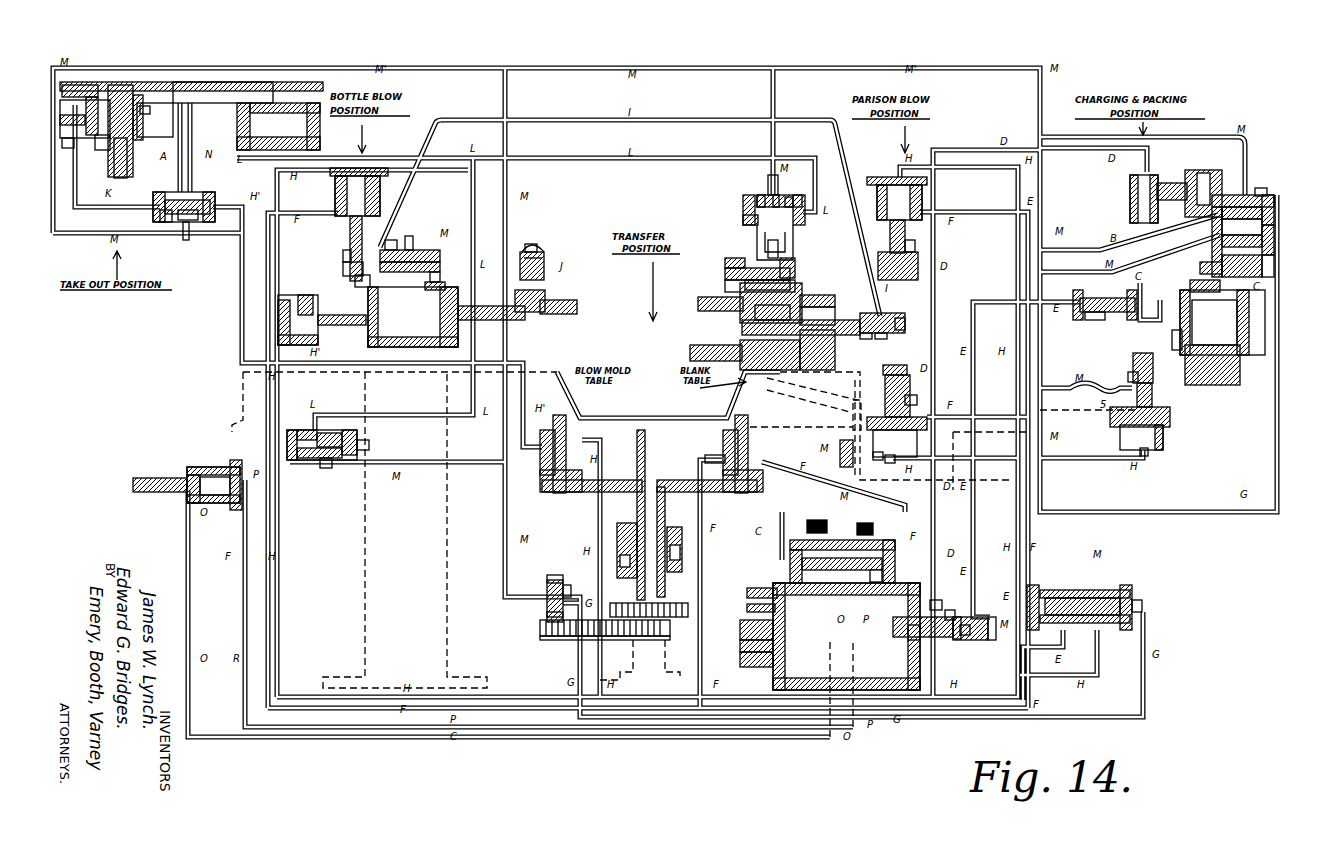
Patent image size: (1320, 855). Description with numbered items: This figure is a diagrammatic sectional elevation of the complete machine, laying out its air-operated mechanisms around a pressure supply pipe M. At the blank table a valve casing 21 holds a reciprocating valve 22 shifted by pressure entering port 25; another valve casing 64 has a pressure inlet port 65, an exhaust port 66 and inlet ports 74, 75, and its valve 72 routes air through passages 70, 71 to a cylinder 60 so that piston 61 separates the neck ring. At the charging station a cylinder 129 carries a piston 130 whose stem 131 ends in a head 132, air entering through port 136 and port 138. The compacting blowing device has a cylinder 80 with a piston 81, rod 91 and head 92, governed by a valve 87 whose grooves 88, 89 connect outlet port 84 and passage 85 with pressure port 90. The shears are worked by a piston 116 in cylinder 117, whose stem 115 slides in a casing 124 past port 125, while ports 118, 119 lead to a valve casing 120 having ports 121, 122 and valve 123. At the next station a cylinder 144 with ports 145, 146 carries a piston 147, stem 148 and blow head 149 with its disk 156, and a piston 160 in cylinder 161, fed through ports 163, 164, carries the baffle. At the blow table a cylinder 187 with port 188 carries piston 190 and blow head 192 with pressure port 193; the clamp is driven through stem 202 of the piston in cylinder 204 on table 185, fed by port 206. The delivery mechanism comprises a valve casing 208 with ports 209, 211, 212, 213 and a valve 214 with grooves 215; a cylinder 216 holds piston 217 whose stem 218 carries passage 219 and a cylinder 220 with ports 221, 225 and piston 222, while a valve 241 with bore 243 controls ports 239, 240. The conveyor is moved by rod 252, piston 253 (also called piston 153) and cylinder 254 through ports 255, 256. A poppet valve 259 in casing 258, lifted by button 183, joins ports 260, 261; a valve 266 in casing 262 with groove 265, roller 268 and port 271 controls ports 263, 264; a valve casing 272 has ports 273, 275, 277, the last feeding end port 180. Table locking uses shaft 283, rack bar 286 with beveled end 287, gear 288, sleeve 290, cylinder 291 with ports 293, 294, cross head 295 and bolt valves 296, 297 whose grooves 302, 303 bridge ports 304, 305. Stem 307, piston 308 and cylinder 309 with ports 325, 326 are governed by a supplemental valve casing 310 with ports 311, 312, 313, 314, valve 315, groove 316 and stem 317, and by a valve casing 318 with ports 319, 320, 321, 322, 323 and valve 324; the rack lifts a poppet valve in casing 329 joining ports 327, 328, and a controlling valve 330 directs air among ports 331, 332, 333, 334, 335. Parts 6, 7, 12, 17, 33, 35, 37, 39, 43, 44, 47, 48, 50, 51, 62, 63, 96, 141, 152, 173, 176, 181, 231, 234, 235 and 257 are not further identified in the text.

The transfer head 6 is at (812, 296).
The transfer head lower body 7 is at (800, 362).
The valve stem 12 is at (848, 433).
The valve rod 17 is at (853, 411).
The valve casing 21 is at (884, 342).
The valve 22 is at (867, 342).
The pressure port 25 is at (906, 332).
The shaft 33 is at (801, 327).
The arm 35 is at (771, 353).
The cam block 37 is at (882, 317).
The block 39 is at (826, 350).
The valve body 43 is at (767, 242).
The pipe connection 44 is at (781, 179).
The valve cap 47 is at (779, 195).
The valve guide 48 is at (788, 240).
The cavity 50 is at (826, 312).
The plate 51 is at (825, 297).
The cylinder 60 is at (769, 286).
The piston 61 is at (780, 279).
The valve block 62 is at (749, 271).
The valve end 63 is at (726, 256).
The valve casing 64 is at (755, 192).
The pressure inlet port 65 is at (787, 190).
The exhaust port 66 is at (794, 196).
The passage 70 is at (798, 264).
The passage 71 is at (768, 249).
The valve 72 is at (743, 203).
The pressure inlet port 74 is at (740, 219).
The pressure inlet port 75 is at (626, 242).
The cylinder 80 is at (1240, 325).
The piston 81 is at (1214, 322).
The outlet port 84 is at (1079, 310).
The passage 85 is at (1172, 341).
The valve 87 is at (1080, 298).
The annular groove 88 is at (1127, 318).
The annular groove 89 is at (1095, 320).
The pressure port 90 is at (1130, 200).
The rod 91 is at (1225, 231).
The head 92 is at (1189, 186).
The cap 96 is at (1190, 285).
The stem 115 is at (1222, 262).
The piston 116 is at (1271, 217).
The cylinder 117 is at (1273, 241).
The port 118 is at (1271, 266).
The port 119 is at (1201, 266).
The valve casing 120 is at (1243, 189).
The port 121 is at (1264, 177).
The inlet port 122 is at (1204, 222).
The valve 123 is at (1222, 213).
The casing 124 is at (1222, 241).
The port 125 is at (1222, 228).
The cylinder 129 is at (1163, 436).
The piston 130 is at (1141, 437).
The stem 131 is at (1152, 395).
The head 132 is at (1136, 356).
The pressure inlet port 136 is at (1119, 376).
The inlet port 138 is at (1155, 457).
The valve flange 141 is at (1132, 421).
The cylinder 144 is at (885, 459).
The port 145 is at (896, 465).
The port 146 is at (902, 417).
The piston 147 is at (895, 443).
The stem 148 is at (921, 397).
The blow head 149 is at (888, 395).
The cylinder base 152 is at (890, 256).
The piston 153 is at (922, 242).
The disk 156 is at (886, 365).
The piston 160 is at (899, 202).
The cylinder 161 is at (877, 194).
The port 163 is at (895, 177).
The port 164 is at (905, 225).
The valve block 173 is at (448, 290).
The cylinder bottom 176 is at (413, 341).
The end port 180 is at (413, 317).
The piston rod 181 is at (450, 335).
The tapered button 183 is at (546, 299).
The table 185 is at (350, 222).
The cylinder 187 is at (335, 193).
The port 188 is at (359, 166).
The piston 190 is at (357, 196).
The blow head 192 is at (343, 266).
The pressure port 193 is at (343, 252).
The stem 202 is at (330, 325).
The cylinder 204 is at (298, 326).
The port 206 is at (313, 302).
The valve casing 208 is at (215, 194).
The pressure inlet port 209 is at (189, 235).
The outlet port 211 is at (195, 200).
The end port 212 is at (160, 215).
The end port 213 is at (222, 207).
The valve 214 is at (185, 203).
The annular grooves 215 is at (181, 220).
The cylinder 216 is at (285, 127).
The piston 217 is at (278, 126).
The stem 218 is at (191, 99).
The passage 219 is at (200, 103).
The cylinder 220 is at (121, 123).
The port 221 is at (155, 120).
The piston 222 is at (138, 100).
The port 225 is at (128, 158).
The pin 231 is at (157, 108).
The spring 234 is at (100, 142).
The nut 235 is at (63, 146).
The pressure port 239 is at (81, 119).
The outlet port 240 is at (68, 128).
The valve 241 is at (92, 97).
The central bore 243 is at (79, 84).
The fluid pressure operated rod 252 is at (160, 477).
The piston 253 is at (215, 486).
The cylinder 254 is at (213, 476).
The port 255 is at (190, 503).
The port 256 is at (246, 480).
The valve 257 is at (320, 438).
The valve casing 258 is at (534, 242).
The poppet valve 259 is at (535, 249).
The outlet port 260 is at (544, 272).
The pressure port 261 is at (520, 275).
The valve casing 262 is at (330, 468).
The port 263 is at (333, 432).
The port 264 is at (315, 458).
The annular groove 265 is at (310, 428).
The valve 266 is at (356, 436).
The roller 268 is at (372, 440).
The radial port 271 is at (351, 284).
The valve casing 272 is at (440, 268).
The end port 273 is at (440, 256).
The pressure port 275 is at (414, 237).
The outlet port 277 is at (397, 246).
The shaft 283 is at (640, 458).
The rack bar 286 is at (545, 640).
The beveled end 287 is at (592, 628).
The gear 288 is at (654, 605).
The sleeve 290 is at (682, 542).
The cylinder 291 is at (688, 556).
The port 293 is at (658, 545).
The port 294 is at (619, 569).
The cross head 295 is at (701, 463).
The combined bolt and valve 296 is at (722, 481).
The combined bolt and valve 297 is at (582, 481).
The annular groove 302 is at (761, 454).
The annular groove 303 is at (563, 452).
The opposed ports 304 is at (744, 452).
The opposed ports 305 is at (569, 454).
The stem 307 is at (754, 633).
The piston 308 is at (754, 649).
The cylinder 309 is at (754, 662).
The supplemental valve casing 310 is at (970, 638).
The pressure port 311 is at (997, 635).
The outlet port 312 is at (954, 606).
The outlet port 313 is at (943, 594).
The exhaust port 314 is at (910, 650).
The valve 315 is at (956, 648).
The annular groove 316 is at (947, 638).
The stem 317 is at (900, 630).
The valve casing 318 is at (790, 546).
The pressure port 319 is at (840, 521).
The port 320 is at (895, 553).
The port 321 is at (790, 562).
The outlet port 322 is at (882, 574).
The outlet port 323 is at (802, 566).
The valve 324 is at (759, 595).
The back port 325 is at (846, 636).
The front port 326 is at (646, 613).
The pressure port 327 is at (547, 592).
The outlet port 328 is at (579, 587).
The casing 329 is at (834, 575).
The controlling valve 330 is at (1132, 599).
The end port 331 is at (1038, 599).
The end port 332 is at (1149, 600).
The pressure port 333 is at (1085, 584).
The outlet port 334 is at (1055, 623).
The outlet port 335 is at (1095, 623).